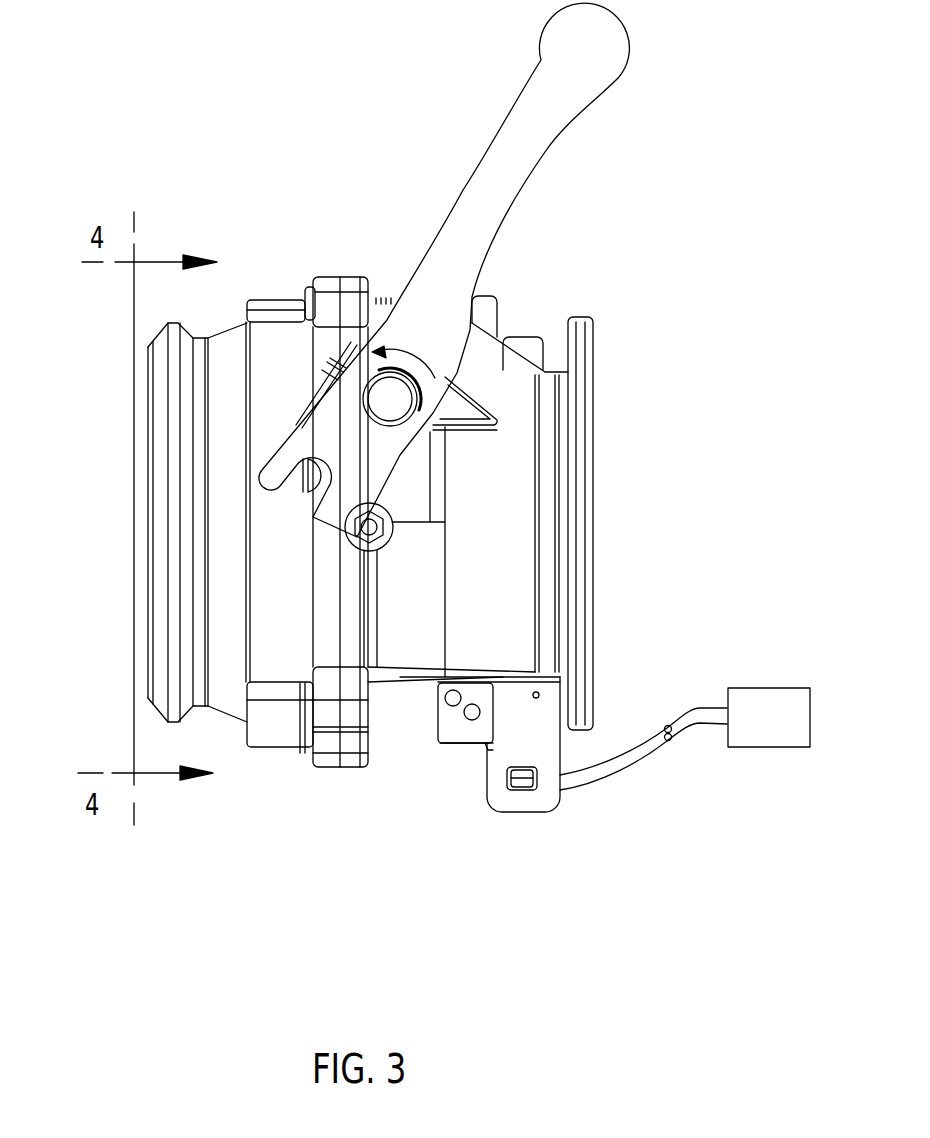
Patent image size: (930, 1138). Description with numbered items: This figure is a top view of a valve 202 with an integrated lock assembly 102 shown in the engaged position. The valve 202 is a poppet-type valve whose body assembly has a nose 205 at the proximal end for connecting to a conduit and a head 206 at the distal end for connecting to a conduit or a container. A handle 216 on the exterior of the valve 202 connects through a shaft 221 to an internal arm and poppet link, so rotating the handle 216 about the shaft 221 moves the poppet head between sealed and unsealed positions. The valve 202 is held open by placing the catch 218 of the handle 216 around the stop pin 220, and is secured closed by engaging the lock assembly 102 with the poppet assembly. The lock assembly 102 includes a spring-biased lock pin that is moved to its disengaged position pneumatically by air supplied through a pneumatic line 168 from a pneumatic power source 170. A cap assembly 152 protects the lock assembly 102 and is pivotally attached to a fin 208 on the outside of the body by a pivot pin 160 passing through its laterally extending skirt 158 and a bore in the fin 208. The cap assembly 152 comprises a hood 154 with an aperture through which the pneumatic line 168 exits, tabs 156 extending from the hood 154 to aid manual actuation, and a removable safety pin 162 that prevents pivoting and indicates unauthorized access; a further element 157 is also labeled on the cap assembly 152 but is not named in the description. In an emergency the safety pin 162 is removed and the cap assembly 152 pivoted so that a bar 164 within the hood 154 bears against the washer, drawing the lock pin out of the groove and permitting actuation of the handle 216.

The lock assembly 102 is at (421, 478).
The cap assembly 152 is at (466, 757).
The hood 154 is at (548, 797).
The tabs 156 is at (521, 779).
The first indicator light 157 is at (451, 705).
The skirt 158 is at (472, 740).
The pivot pin 160 is at (448, 710).
The safety pin 162 is at (470, 719).
The bar 164 is at (540, 693).
The pneumatic line 168 is at (650, 755).
The pneumatic power source 170 is at (770, 740).
The valve 202 is at (389, 433).
The nose 205 is at (157, 440).
The head 206 is at (520, 498).
The fin 208 is at (377, 703).
The handle 216 is at (502, 270).
The catch 218 is at (300, 500).
The stop pin 220 is at (355, 532).
The shaft 221 is at (393, 400).